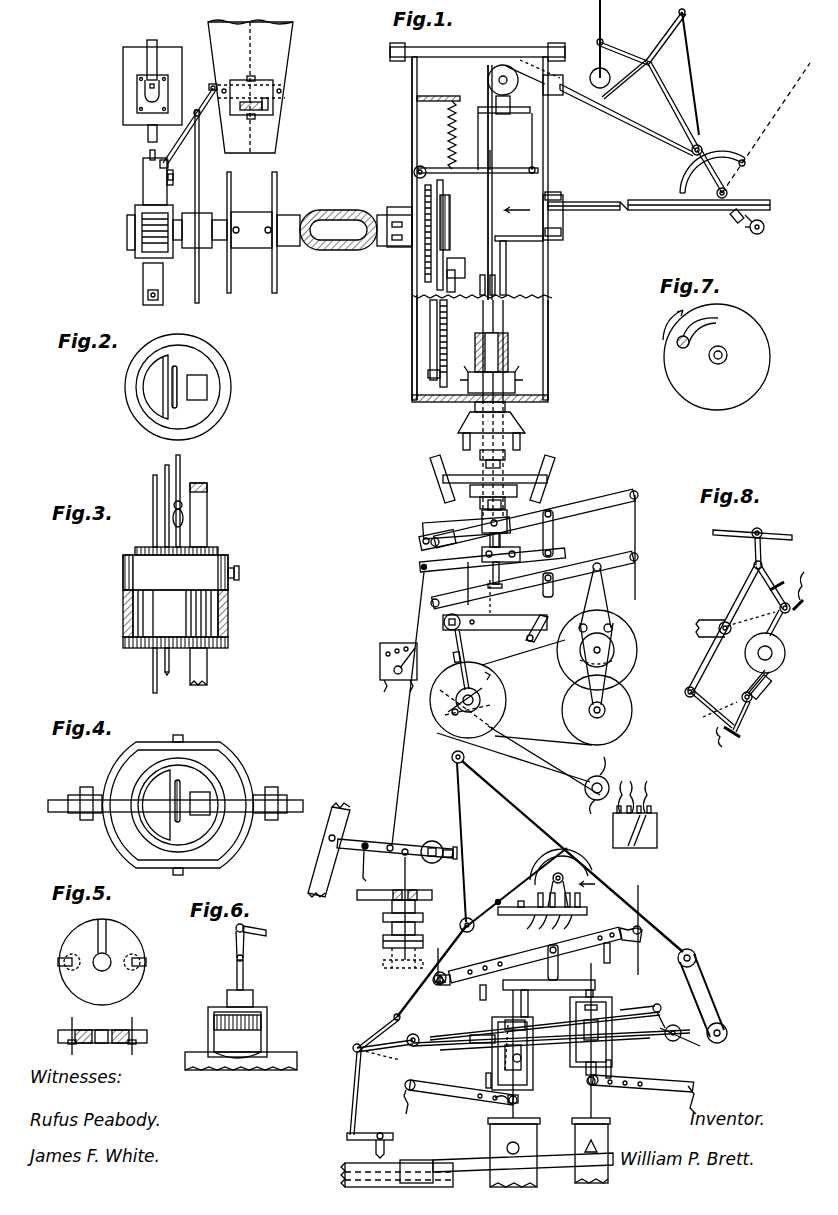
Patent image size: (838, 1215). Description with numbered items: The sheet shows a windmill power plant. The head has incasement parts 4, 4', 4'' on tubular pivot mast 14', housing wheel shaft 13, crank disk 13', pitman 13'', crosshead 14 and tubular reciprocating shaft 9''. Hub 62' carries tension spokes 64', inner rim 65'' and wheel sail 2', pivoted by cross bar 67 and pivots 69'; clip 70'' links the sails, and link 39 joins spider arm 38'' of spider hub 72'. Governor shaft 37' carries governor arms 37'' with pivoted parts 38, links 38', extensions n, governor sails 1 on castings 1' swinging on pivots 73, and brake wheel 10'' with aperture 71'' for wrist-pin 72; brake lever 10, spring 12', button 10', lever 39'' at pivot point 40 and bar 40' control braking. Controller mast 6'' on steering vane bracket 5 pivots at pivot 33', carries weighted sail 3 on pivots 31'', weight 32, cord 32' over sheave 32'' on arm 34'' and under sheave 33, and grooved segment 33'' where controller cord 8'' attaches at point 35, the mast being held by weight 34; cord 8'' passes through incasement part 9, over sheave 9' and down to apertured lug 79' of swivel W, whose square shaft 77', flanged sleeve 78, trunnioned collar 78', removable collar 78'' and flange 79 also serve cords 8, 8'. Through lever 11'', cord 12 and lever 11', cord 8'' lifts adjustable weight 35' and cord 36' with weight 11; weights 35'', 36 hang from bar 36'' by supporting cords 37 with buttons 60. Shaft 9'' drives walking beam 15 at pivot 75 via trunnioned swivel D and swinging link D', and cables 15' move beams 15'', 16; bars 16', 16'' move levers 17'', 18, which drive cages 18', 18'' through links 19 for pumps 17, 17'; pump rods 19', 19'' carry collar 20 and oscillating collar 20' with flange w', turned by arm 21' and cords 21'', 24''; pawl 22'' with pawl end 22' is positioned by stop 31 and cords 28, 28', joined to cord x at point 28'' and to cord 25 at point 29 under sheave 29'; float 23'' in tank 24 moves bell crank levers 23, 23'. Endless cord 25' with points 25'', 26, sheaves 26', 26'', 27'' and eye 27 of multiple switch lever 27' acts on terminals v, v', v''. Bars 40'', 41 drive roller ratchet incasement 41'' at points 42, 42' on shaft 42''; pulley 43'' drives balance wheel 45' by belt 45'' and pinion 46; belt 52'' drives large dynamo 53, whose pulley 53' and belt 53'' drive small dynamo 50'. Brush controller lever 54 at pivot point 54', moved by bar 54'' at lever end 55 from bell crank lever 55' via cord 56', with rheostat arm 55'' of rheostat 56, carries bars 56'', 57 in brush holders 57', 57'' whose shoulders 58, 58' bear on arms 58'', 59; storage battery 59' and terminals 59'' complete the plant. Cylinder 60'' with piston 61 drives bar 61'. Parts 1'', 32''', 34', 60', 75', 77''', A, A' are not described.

In FIG. 1, the governor sail 1 is at (152, 82).
In FIG. 1, the casting 1' is at (131, 93).
In FIG. 1, the catch plate 1'' is at (135, 90).
In FIG. 1, the wheel sail 2' is at (250, 86).
In FIG. 1, the weighted sail 3 is at (608, 39).
In FIG. 1, the incasement part 4 is at (477, 216).
In FIG. 1, the incasement part 4' is at (398, 228).
In FIG. 1, the incasement part 4'' is at (475, 340).
In FIG. 1, the steering vane bracket 5 is at (645, 211).
In FIG. 1, the mast 6'' is at (673, 106).
In FIG. 3, the cord 8 is at (145, 670).
In FIG. 3, the cord 8' is at (159, 580).
In FIG. 1, the controller cord 8'' is at (579, 307).
In FIG. 3, the controller cord 8'' is at (186, 501).
In FIG. 1, the incasement part 9 is at (534, 136).
In FIG. 1, the sheave 9' is at (543, 481).
In FIG. 1, the tubular reciprocating shaft 9'' is at (489, 423).
In FIG. 1, the brake lever 10 is at (476, 168).
In FIG. 1, the button 10' is at (475, 141).
In FIG. 1, the brake wheel 10'' is at (454, 235).
In FIG. 7, the brake wheel 10'' is at (717, 357).
In FIG. 1, the weight 11 is at (388, 961).
In FIG. 5, the weight 11 is at (102, 962).
In FIG. 1, the lever 11' is at (380, 850).
In FIG. 1, the lever 11'' is at (473, 560).
In FIG. 4, the lever 11'' is at (170, 797).
In FIG. 1, the cord 12 is at (400, 708).
In FIG. 1, the spring 12' is at (438, 132).
In FIG. 1, the wheel shaft 13 is at (382, 218).
In FIG. 1, the crank disk 13' is at (407, 230).
In FIG. 1, the pitman 13'' is at (431, 343).
In FIG. 1, the crosshead 14 is at (504, 351).
In FIG. 1, the tubular pivot mast 14' is at (506, 432).
In FIG. 1, the walking beam 15 is at (534, 518).
In FIG. 1, the cable 15' is at (528, 740).
In FIG. 1, the walking beam 15'' is at (534, 580).
In FIG. 1, the walking beam 16 is at (546, 955).
In FIG. 1, the bar 16' is at (622, 1011).
In FIG. 1, the bar 16'' is at (472, 1034).
In FIG. 1, the pump 17 is at (591, 1150).
In FIG. 1, the pump 17' is at (514, 1152).
In FIG. 1, the lever 17'' is at (642, 1094).
In FIG. 1, the lever 18 is at (459, 1099).
In FIG. 1, the cage 18' is at (576, 1073).
In FIG. 1, the cage 18'' is at (529, 1091).
In FIG. 1, the link 19 is at (550, 1105).
In FIG. 1, the pump rod 19' is at (605, 1092).
In FIG. 1, the pump rod 19'' is at (489, 1106).
In FIG. 1, the collar 20 is at (547, 1093).
In FIG. 1, the oscillating collar 20' is at (597, 1015).
In FIG. 1, the arm 21' is at (571, 981).
In FIG. 1, the cord 21'' is at (450, 993).
In FIG. 1, the pawl end 22' is at (568, 1053).
In FIG. 1, the pawl 22'' is at (500, 1045).
In FIG. 1, the weighted bell crank lever 23 is at (660, 1023).
In FIG. 1, the bell crank lever 23' is at (376, 1032).
In FIG. 6, the bell crank lever 23' is at (260, 946).
In FIG. 1, the float 23'' is at (519, 1156).
In FIG. 1, the tank 24 is at (387, 1166).
In FIG. 1, the cord 24'' is at (478, 1033).
In FIG. 1, the cord 25 is at (432, 971).
In FIG. 1, the endless cord 25' is at (570, 856).
In FIG. 1, the attaching point 25'' is at (647, 947).
In FIG. 1, the attaching point 26 is at (514, 889).
In FIG. 1, the sheave 26' is at (447, 763).
In FIG. 1, the sheave 26'' is at (455, 926).
In FIG. 1, the eye 27 is at (576, 835).
In FIG. 1, the multiple switch lever 27' is at (559, 860).
In FIG. 1, the sheave 27'' is at (702, 976).
In FIG. 1, the cord 28 is at (551, 1043).
In FIG. 1, the cord 28' is at (545, 1032).
In FIG. 1, the attaching point 28'' is at (665, 1043).
In FIG. 1, the attaching point 29 is at (400, 1050).
In FIG. 1, the sheave 29' is at (381, 1089).
In FIG. 1, the removable stop 31 is at (530, 1059).
In FIG. 1, the pivot 31'' is at (586, 30).
In FIG. 1, the weight 32 is at (610, 79).
In FIG. 1, the cord 32' is at (536, 611).
In FIG. 1, the sheave 32'' is at (656, 38).
In FIG. 1, the pivot 32''' is at (699, 72).
In FIG. 1, the sheave 33 is at (710, 138).
In FIG. 1, the pivot 33' is at (753, 130).
In FIG. 1, the grooved segment 33'' is at (703, 172).
In FIG. 1, the weight 34 is at (773, 224).
In FIG. 1, the stub 34' is at (727, 224).
In FIG. 1, the arm 34'' is at (641, 54).
In FIG. 1, the attaching point 35 is at (762, 163).
In FIG. 1, the adjustable weight 35' is at (437, 846).
In FIG. 1, the weight 35'' is at (380, 944).
In FIG. 1, the weight 36 is at (383, 917).
In FIG. 1, the cord 36' is at (401, 908).
In FIG. 1, the bar 36'' is at (383, 902).
In FIG. 1, the supporting cord 37 is at (410, 915).
In FIG. 5, the supporting cord 37 is at (102, 1036).
In FIG. 1, the governor shaft 37' is at (231, 224).
In FIG. 7, the governor shaft 37' is at (728, 357).
In FIG. 1, the governor arm 37'' is at (125, 272).
In FIG. 1, the pivoted part 38 is at (144, 181).
In FIG. 1, the link 38' is at (188, 128).
In FIG. 1, the spider arm 38'' is at (208, 206).
In FIG. 1, the link 39 is at (201, 93).
In FIG. 1, the lever 39'' is at (472, 182).
In FIG. 1, the pivot point 40 is at (504, 115).
In FIG. 1, the bar 40' is at (525, 143).
In FIG. 1, the bar 40'' is at (600, 597).
In FIG. 1, the bar 41 is at (560, 585).
In FIG. 1, the roller ratchet incasement 41'' is at (612, 655).
In FIG. 1, the attaching point 42 is at (597, 654).
In FIG. 1, the attaching point 42' is at (566, 618).
In FIG. 1, the shaft 42'' is at (588, 650).
In FIG. 1, the pulley 43'' is at (555, 648).
In FIG. 1, the balance wheel 45' is at (591, 710).
In FIG. 1, the belt 45'' is at (619, 670).
In FIG. 1, the pinion 46 is at (593, 715).
In FIG. 1, the small dynamo 50' is at (589, 785).
In FIG. 1, the belt 52'' is at (537, 692).
In FIG. 1, the large dynamo 53 is at (468, 700).
In FIG. 8, the large dynamo 53 is at (752, 653).
In FIG. 1, the pulley 53' is at (449, 712).
In FIG. 1, the belt 53'' is at (518, 750).
In FIG. 1, the lever 54 is at (452, 659).
In FIG. 8, the lever 54 is at (724, 615).
In FIG. 8, the pivot point 54' is at (710, 617).
In FIG. 1, the bar 54'' is at (525, 629).
In FIG. 8, the bar 54'' is at (760, 543).
In FIG. 1, the lever end 55 is at (450, 632).
In FIG. 8, the lever end 55 is at (755, 524).
In FIG. 1, the bell crank lever 55' is at (495, 629).
In FIG. 1, the rheostat arm 55'' is at (397, 628).
In FIG. 1, the rheostat 56 is at (384, 664).
In FIG. 1, the cord 56' is at (452, 583).
In FIG. 8, the bar 56'' is at (697, 717).
In FIG. 8, the bar 57 is at (771, 588).
In FIG. 8, the brush holder 57' is at (765, 689).
In FIG. 8, the brush holder 57'' is at (768, 623).
In FIG. 8, the shoulder 58 is at (742, 735).
In FIG. 8, the shoulder 58' is at (783, 578).
In FIG. 1, the arm 58'' is at (467, 716).
In FIG. 8, the arm 58'' is at (726, 710).
In FIG. 1, the arm 59 is at (506, 669).
In FIG. 8, the arm 59 is at (804, 591).
In FIG. 1, the storage battery 59' is at (635, 827).
In FIG. 1, the terminals 59'' is at (635, 789).
In FIG. 5, the button 60 is at (102, 1046).
In FIG. 6, the cylinder 60' is at (234, 1038).
In FIG. 6, the cylinder 60'' is at (254, 1041).
In FIG. 6, the piston 61 is at (220, 1010).
In FIG. 6, the bar 61' is at (220, 957).
In FIG. 1, the hub 62' is at (252, 232).
In FIG. 1, the tension spoke 64' is at (265, 257).
In FIG. 1, the inner rim 65'' is at (274, 111).
In FIG. 1, the cross bar 67 is at (251, 97).
In FIG. 1, the pivot 69' is at (252, 95).
In FIG. 1, the clip 70'' is at (205, 79).
In FIG. 7, the elongated aperture 71'' is at (700, 327).
In FIG. 1, the wrist-pin 72 is at (459, 269).
In FIG. 7, the wrist-pin 72 is at (680, 353).
In FIG. 1, the spider hub 72' is at (197, 250).
In FIG. 1, the pivot 73 is at (127, 235).
In FIG. 1, the pivot 75 is at (557, 533).
In FIG. 1, the pivot 75' is at (506, 511).
In FIG. 1, the square shaft 77' is at (527, 414).
In FIG. 3, the square shaft 77' is at (212, 584).
In FIG. 1, the shelf 77''' is at (529, 227).
In FIG. 2, the flanged sleeve 78 is at (196, 398).
In FIG. 3, the flanged sleeve 78 is at (175, 613).
In FIG. 4, the flanged sleeve 78 is at (197, 814).
In FIG. 3, the trunnioned collar 78' is at (177, 613).
In FIG. 4, the trunnioned collar 78' is at (188, 805).
In FIG. 3, the removable collar 78'' is at (181, 568).
In FIG. 2, the flange 79 is at (188, 387).
In FIG. 3, the flange 79 is at (161, 642).
In FIG. 1, the apertured lug 79' is at (520, 536).
In FIG. 2, the apertured lug 79' is at (172, 387).
In FIG. 3, the apertured lug 79' is at (208, 518).
In FIG. 4, the apertured lug 79' is at (173, 805).
In FIG. 1, the strut A is at (566, 477).
In FIG. 1, the strut A' is at (471, 452).
In FIG. 1, the trunnioned swivel D is at (467, 527).
In FIG. 1, the swinging link D' is at (573, 537).
In FIG. 1, the swivel W is at (486, 551).
In FIG. 1, the extension n is at (143, 140).
In FIG. 1, the terminals v is at (542, 910).
In FIG. 1, the terminals v' is at (552, 885).
In FIG. 1, the terminals v'' is at (551, 893).
In FIG. 1, the flange w' is at (563, 1003).
In FIG. 1, the cord x is at (717, 1017).